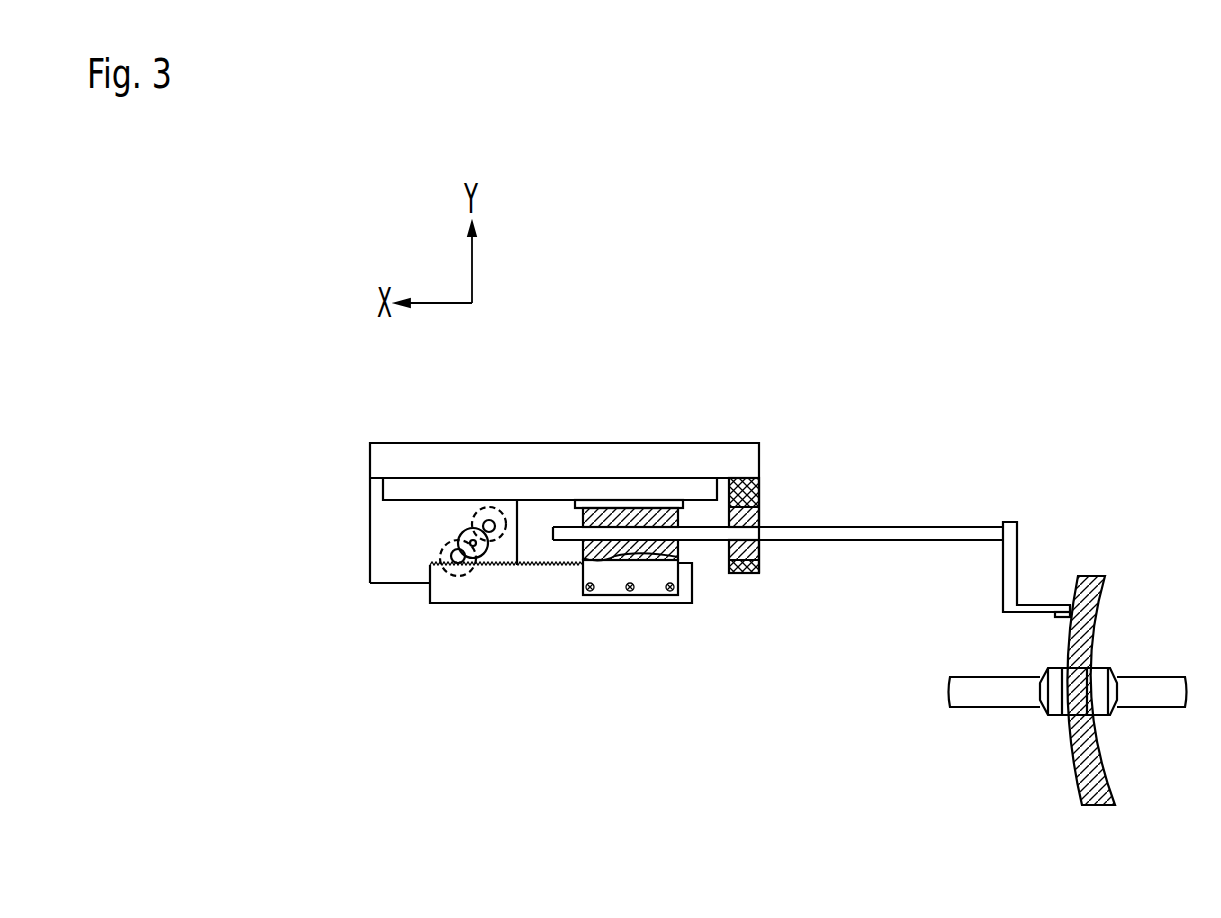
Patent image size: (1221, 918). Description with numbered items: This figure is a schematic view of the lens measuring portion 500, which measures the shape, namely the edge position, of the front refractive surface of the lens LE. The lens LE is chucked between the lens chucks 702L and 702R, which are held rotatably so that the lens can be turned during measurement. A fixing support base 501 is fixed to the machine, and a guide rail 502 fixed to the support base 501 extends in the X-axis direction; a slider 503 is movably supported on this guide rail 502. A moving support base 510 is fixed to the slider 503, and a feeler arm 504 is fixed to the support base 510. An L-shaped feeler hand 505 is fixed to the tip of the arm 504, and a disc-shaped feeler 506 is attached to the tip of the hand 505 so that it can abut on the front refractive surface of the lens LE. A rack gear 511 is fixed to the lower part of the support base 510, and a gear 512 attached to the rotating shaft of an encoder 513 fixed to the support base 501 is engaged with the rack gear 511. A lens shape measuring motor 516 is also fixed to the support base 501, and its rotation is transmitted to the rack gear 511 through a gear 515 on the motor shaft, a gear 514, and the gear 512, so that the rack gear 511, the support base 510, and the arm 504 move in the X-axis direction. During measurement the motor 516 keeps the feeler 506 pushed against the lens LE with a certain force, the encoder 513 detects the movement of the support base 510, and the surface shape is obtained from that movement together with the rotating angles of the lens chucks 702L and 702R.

The lens measuring portion 500 is at (662, 318).
The fixing support base 501 is at (615, 457).
The guide rail 502 is at (388, 493).
The slider 503 is at (657, 502).
The feeler arm 504 is at (935, 530).
The feeler hand 505 is at (1008, 585).
The feeler 506 is at (1060, 618).
The moving support base 510 is at (650, 590).
The rack gear 511 is at (540, 590).
The gear 512 is at (428, 562).
The encoder 513 is at (445, 549).
The gear 514 is at (458, 538).
The gear 515 is at (497, 517).
The lens shape measuring motor 516 is at (469, 505).
The lens chuck 702L is at (995, 708).
The lens chuck 702R is at (1158, 708).
The lens LE is at (1112, 793).